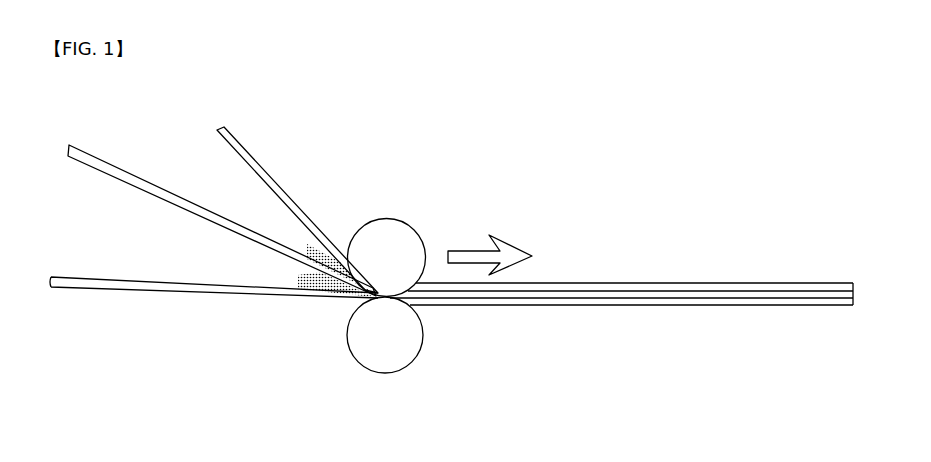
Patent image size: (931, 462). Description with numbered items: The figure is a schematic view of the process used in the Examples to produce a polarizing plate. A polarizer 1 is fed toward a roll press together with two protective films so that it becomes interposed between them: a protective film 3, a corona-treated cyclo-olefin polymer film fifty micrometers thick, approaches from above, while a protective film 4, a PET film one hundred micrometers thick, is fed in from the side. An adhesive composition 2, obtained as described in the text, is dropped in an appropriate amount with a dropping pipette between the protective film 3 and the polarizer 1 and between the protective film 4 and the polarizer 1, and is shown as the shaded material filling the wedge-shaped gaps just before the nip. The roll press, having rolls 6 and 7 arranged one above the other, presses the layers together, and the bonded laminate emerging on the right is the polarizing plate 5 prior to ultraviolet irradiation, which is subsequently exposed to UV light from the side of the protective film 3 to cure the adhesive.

The polarizer 1 is at (103, 157).
The adhesive composition 2 is at (300, 298).
The protective film 3 is at (251, 153).
The protective film 4 is at (64, 273).
The polarizing plate 5 is at (714, 282).
The roll 6 is at (372, 357).
The roll 7 is at (405, 233).